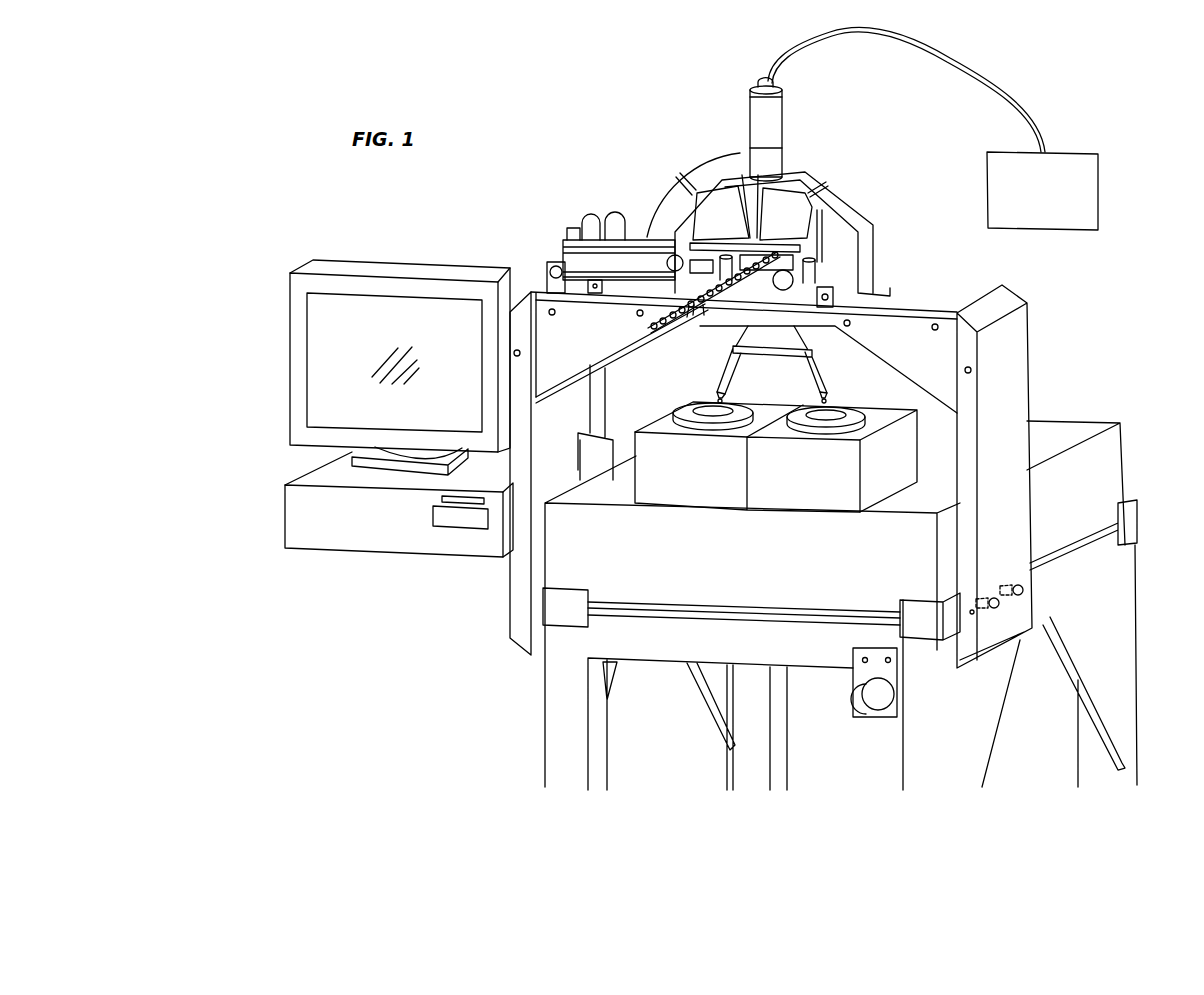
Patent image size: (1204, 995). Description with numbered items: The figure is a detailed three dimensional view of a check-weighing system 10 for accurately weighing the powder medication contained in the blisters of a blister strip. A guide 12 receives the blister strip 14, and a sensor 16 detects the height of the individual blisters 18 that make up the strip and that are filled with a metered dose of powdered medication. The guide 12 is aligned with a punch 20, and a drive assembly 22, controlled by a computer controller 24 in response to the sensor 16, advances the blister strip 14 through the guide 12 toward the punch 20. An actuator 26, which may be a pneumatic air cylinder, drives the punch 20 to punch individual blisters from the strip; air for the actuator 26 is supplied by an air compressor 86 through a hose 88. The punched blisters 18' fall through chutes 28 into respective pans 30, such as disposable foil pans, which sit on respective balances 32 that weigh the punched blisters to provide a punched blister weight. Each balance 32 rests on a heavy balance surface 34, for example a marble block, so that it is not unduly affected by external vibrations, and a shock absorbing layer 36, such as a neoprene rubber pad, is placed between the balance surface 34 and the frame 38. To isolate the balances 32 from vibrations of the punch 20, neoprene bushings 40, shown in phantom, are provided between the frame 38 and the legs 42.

The check-weighing system 10 is at (427, 643).
The guide 12 is at (783, 277).
The blister strip 14 is at (657, 328).
The sensor 16 is at (727, 229).
The blisters 18 is at (701, 334).
The punched blisters 18' is at (765, 388).
The punch 20 is at (770, 243).
The drive assembly 22 is at (633, 237).
The computer controller 24 is at (300, 514).
The actuator 26 is at (786, 119).
The chutes 28 is at (807, 367).
The pans 30 is at (698, 414).
The balances 32 is at (720, 488).
The balance surface 34 is at (1062, 430).
The shock absorbing layer 36 is at (788, 613).
The frame 38 is at (1130, 600).
The neoprene bushings 40 is at (1000, 605).
The legs 42 is at (1020, 371).
The air compressor 86 is at (1100, 170).
The hose 88 is at (985, 73).